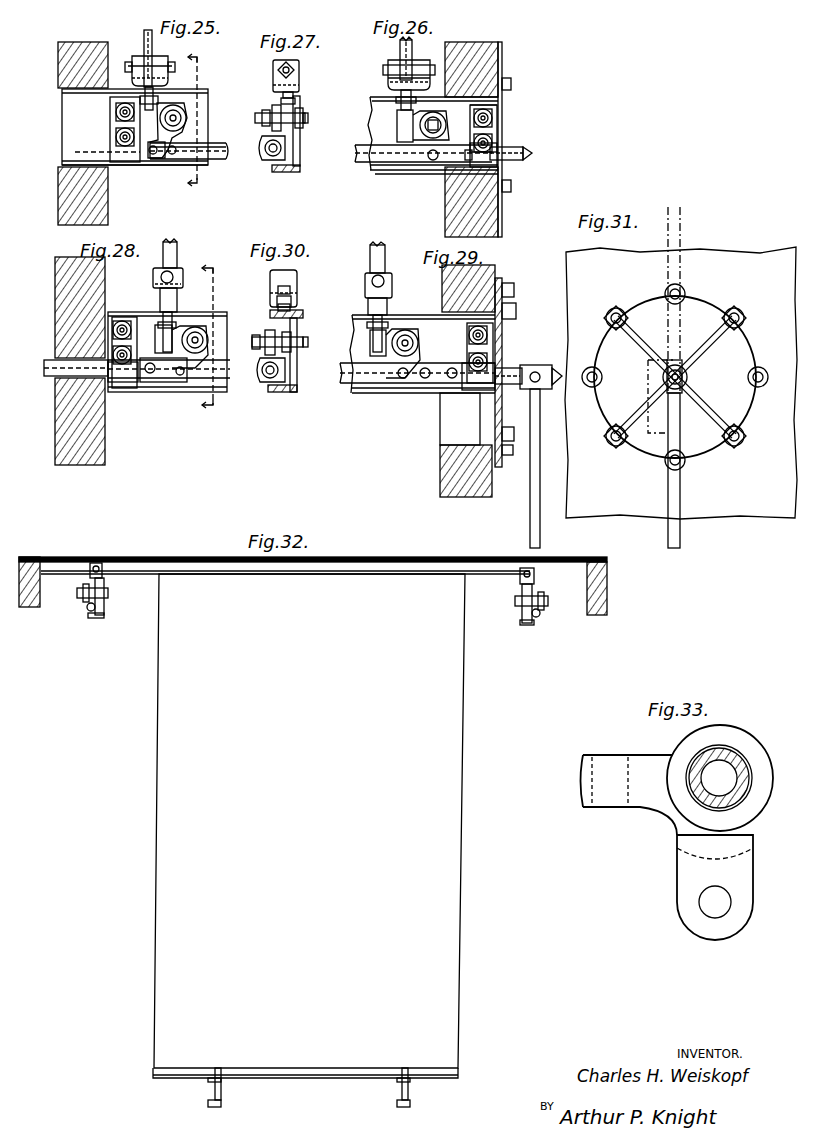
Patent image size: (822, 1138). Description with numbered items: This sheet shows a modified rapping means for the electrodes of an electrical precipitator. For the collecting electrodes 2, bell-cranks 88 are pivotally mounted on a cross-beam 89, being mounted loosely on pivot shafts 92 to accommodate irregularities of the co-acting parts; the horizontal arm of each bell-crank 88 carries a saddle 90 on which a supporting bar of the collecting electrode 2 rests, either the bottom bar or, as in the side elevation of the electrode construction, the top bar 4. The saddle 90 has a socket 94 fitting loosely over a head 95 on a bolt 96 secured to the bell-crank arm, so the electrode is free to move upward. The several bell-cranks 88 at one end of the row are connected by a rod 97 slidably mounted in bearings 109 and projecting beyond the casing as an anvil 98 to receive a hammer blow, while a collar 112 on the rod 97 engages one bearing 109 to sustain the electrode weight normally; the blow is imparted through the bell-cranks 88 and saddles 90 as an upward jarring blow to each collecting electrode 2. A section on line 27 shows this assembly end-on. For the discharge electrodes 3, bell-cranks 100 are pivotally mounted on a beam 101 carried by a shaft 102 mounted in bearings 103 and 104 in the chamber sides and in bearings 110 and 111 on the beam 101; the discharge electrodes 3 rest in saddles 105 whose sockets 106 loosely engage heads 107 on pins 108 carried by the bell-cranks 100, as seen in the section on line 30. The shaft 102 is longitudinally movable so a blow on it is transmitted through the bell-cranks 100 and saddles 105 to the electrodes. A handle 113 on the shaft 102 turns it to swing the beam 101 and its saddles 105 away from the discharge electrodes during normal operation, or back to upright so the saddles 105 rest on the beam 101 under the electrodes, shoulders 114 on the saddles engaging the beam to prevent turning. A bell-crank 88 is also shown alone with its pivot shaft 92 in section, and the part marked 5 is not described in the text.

In FIG. 25, the collecting electrode 2 is at (146, 30).
In FIG. 26, the collecting electrode 2 is at (392, 78).
In FIG. 32, the collecting electrode 2 is at (157, 680).
In FIG. 28, the discharge electrode 3 is at (177, 249).
In FIG. 29, the discharge electrode 3 is at (373, 245).
In FIG. 32, the top bar 4 is at (141, 576).
In FIG. 25, the hanger bracket 5 is at (158, 56).
In FIG. 26, the hanger bracket 5 is at (418, 62).
In FIG. 25, the section line 27- 27 is at (204, 122).
In FIG. 28, the section line 30- 30 is at (219, 337).
In FIG. 25, the bell-crank 88 is at (178, 136).
In FIG. 27, the bell-crank 88 is at (286, 142).
In FIG. 26, the bell-crank 88 is at (397, 132).
In FIG. 32, the bell-crank 88 is at (88, 605).
In FIG. 33, the bell-crank 88 is at (686, 856).
In FIG. 25, the cross-beam 89 is at (125, 165).
In FIG. 27, the cross-beam 89 is at (290, 172).
In FIG. 26, the cross-beam 89 is at (412, 172).
In FIG. 32, the cross-beam 89 is at (104, 604).
In FIG. 25, the saddle 90 is at (142, 60).
In FIG. 26, the saddle 90 is at (398, 63).
In FIG. 32, the saddle 90 is at (90, 570).
In FIG. 25, the pivot shaft 92 is at (180, 110).
In FIG. 27, the pivot shaft 92 is at (306, 118).
In FIG. 32, the pivot shaft 92 is at (80, 594).
In FIG. 33, the pivot shaft 92 is at (730, 752).
In FIG. 27, the socket 94 is at (296, 78).
In FIG. 27, the head 95 is at (294, 94).
In FIG. 27, the bolt 96 is at (283, 100).
In FIG. 25, the rod 97 is at (226, 155).
In FIG. 26, the rod 97 is at (372, 164).
In FIG. 26, the anvil 98 is at (512, 148).
In FIG. 28, the bell-crank 100 is at (210, 352).
In FIG. 30, the bell-crank 100 is at (298, 352).
In FIG. 29, the bell-crank 100 is at (412, 356).
In FIG. 28, the beam 101 is at (140, 314).
In FIG. 30, the beam 101 is at (288, 392).
In FIG. 29, the beam 101 is at (428, 320).
In FIG. 31, the beam 101 is at (650, 438).
In FIG. 28, the shaft 102 is at (160, 378).
In FIG. 29, the shaft 102 is at (378, 385).
In FIG. 28, the bearing 103 is at (62, 368).
In FIG. 29, the bearing 104 is at (500, 374).
In FIG. 31, the bearing 104 is at (690, 377).
In FIG. 28, the saddle 105 is at (153, 272).
In FIG. 30, the saddle 105 is at (277, 288).
In FIG. 30, the socket 106 is at (296, 285).
In FIG. 30, the head 107 is at (298, 296).
In FIG. 30, the pin 108 is at (278, 307).
In FIG. 25, the bearing 109 is at (107, 155).
In FIG. 26, the bearing 109 is at (498, 165).
In FIG. 28, the bearing 110 is at (120, 378).
In FIG. 29, the bearing 111 is at (468, 386).
In FIG. 26, the collar 112 is at (475, 143).
In FIG. 29, the handle 113 is at (532, 496).
In FIG. 31, the handle 113 is at (673, 510).
In FIG. 30, the shoulder 114 is at (300, 318).